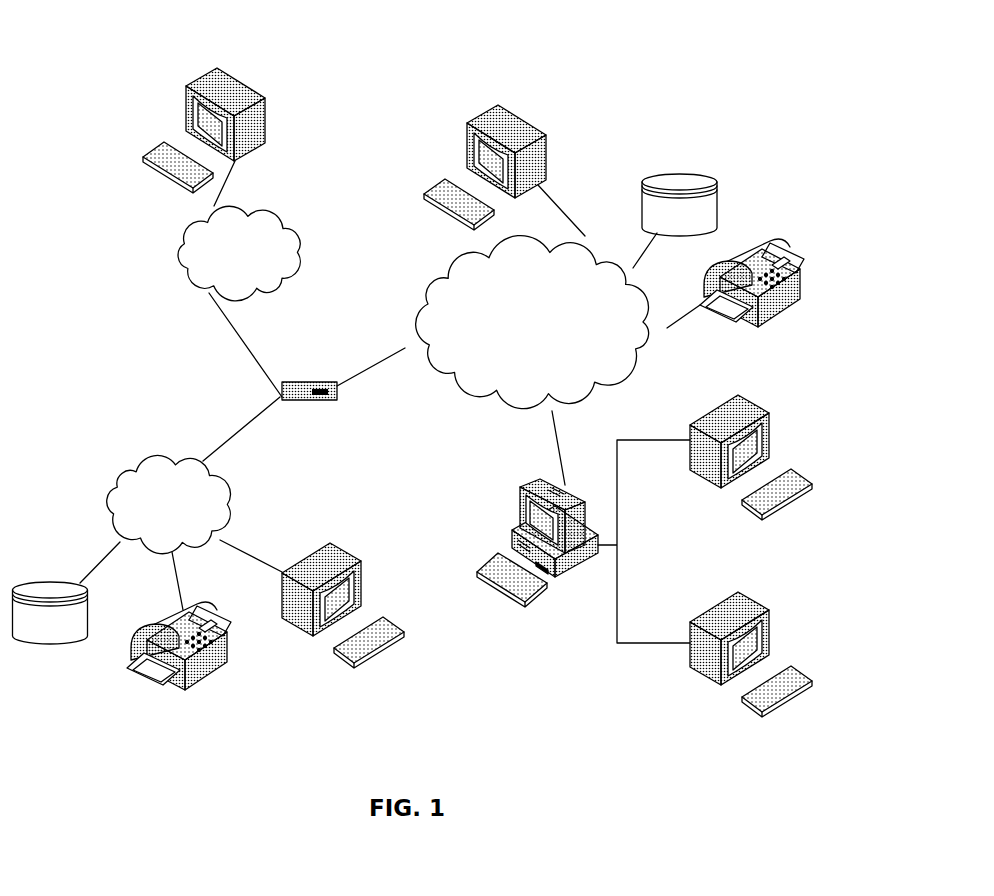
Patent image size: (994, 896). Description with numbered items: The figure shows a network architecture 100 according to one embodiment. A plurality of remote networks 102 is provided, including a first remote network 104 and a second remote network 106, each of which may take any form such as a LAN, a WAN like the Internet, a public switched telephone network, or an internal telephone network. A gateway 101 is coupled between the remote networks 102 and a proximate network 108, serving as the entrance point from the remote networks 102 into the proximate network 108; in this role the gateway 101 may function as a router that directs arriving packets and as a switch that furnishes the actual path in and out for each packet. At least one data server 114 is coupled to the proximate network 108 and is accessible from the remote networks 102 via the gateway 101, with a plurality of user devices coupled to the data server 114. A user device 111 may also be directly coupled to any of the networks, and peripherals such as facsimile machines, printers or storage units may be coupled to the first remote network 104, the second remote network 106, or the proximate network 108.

The network architecture 100 is at (120, 51).
The gateway 101 is at (294, 381).
The remote networks 102 is at (148, 309).
The first remote network 104 is at (104, 480).
The second remote network 106 is at (300, 227).
The proximate network 108 is at (628, 383).
The user device 111 is at (547, 137).
The data server 114 is at (520, 494).